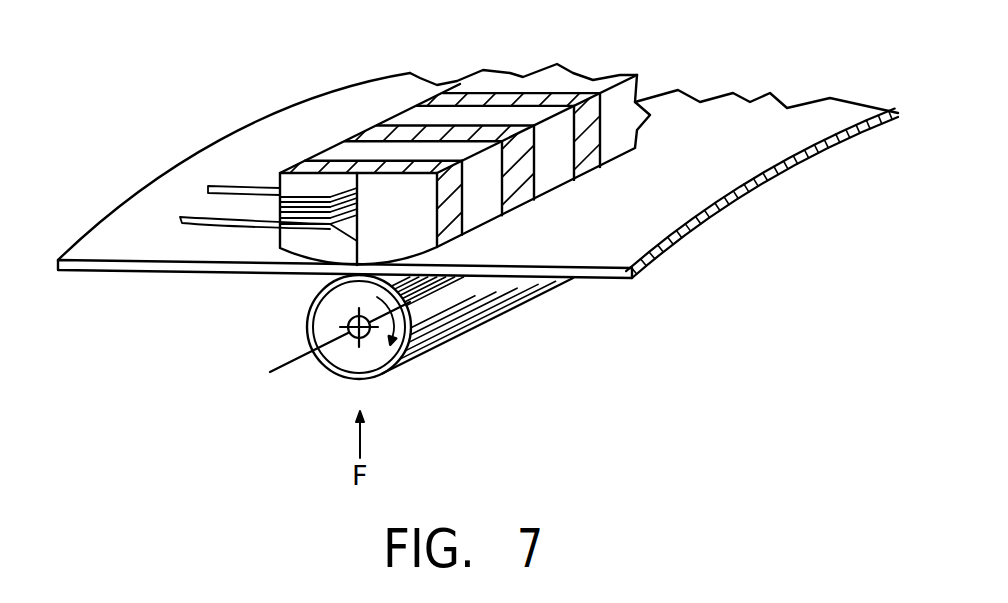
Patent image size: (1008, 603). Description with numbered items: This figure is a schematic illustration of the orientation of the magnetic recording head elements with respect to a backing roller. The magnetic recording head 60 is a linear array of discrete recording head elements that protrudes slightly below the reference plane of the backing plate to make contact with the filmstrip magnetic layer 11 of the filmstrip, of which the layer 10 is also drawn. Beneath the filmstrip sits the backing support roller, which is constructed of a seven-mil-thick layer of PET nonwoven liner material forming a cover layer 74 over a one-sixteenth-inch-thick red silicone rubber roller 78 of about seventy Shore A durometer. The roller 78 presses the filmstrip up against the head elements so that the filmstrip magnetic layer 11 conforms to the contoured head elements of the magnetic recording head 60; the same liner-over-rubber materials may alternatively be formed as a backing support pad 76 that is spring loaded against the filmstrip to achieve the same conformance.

The lower sheet (substrate) 10 is at (673, 212).
The filmstrip magnetic layer 11 is at (177, 177).
The magnetic recording head 60 is at (324, 93).
The cover layer 74 is at (357, 380).
The backing support pad 76 is at (412, 382).
The red silicone rubber roller 78 is at (323, 363).